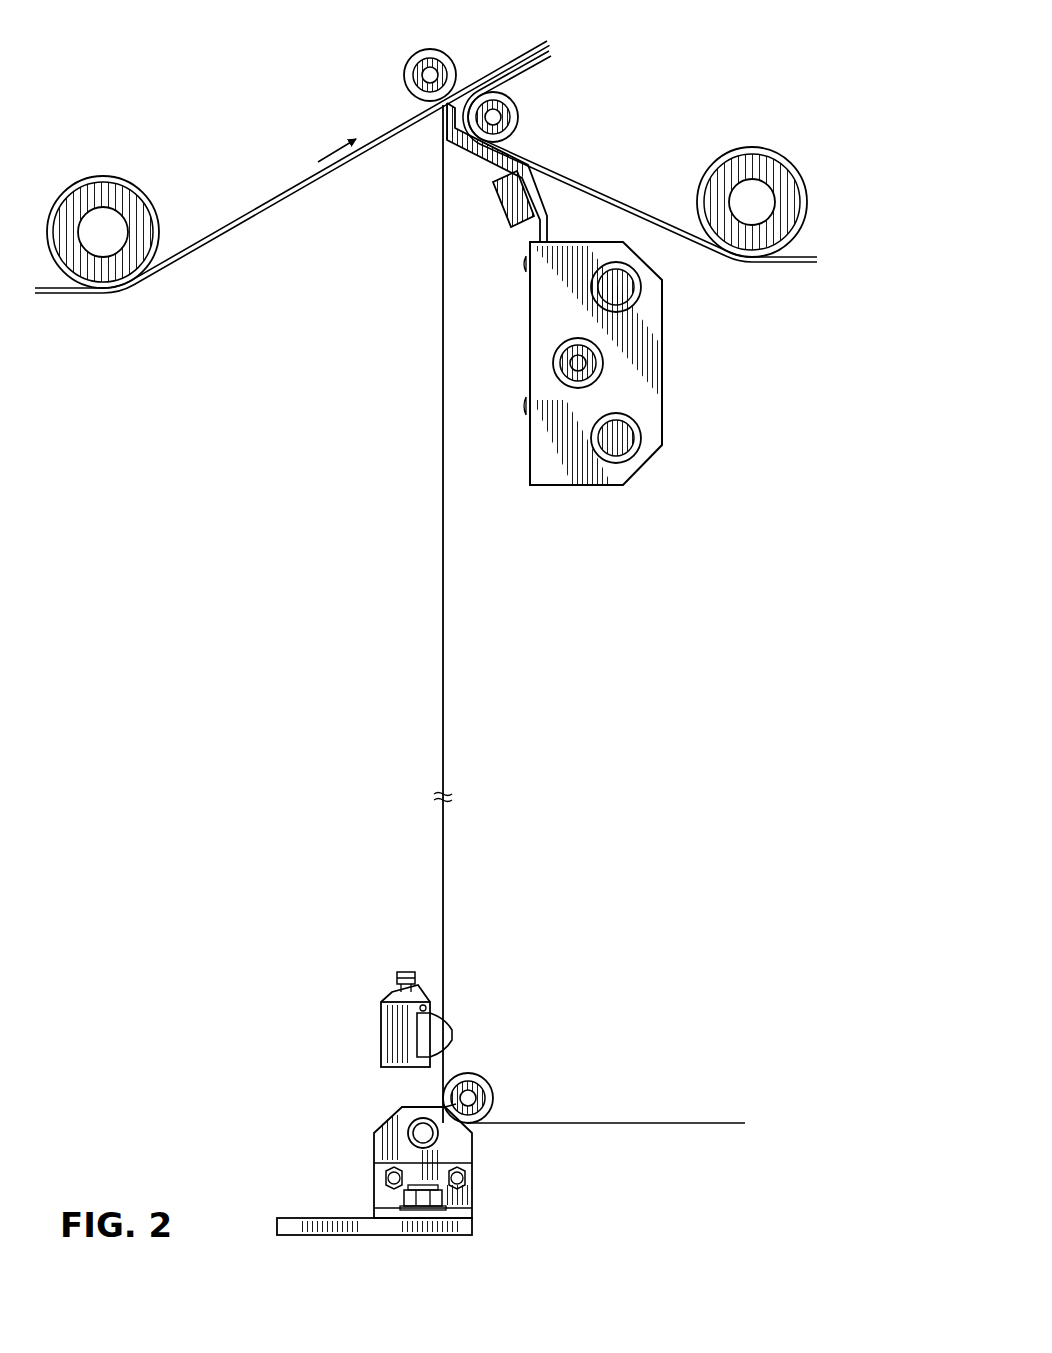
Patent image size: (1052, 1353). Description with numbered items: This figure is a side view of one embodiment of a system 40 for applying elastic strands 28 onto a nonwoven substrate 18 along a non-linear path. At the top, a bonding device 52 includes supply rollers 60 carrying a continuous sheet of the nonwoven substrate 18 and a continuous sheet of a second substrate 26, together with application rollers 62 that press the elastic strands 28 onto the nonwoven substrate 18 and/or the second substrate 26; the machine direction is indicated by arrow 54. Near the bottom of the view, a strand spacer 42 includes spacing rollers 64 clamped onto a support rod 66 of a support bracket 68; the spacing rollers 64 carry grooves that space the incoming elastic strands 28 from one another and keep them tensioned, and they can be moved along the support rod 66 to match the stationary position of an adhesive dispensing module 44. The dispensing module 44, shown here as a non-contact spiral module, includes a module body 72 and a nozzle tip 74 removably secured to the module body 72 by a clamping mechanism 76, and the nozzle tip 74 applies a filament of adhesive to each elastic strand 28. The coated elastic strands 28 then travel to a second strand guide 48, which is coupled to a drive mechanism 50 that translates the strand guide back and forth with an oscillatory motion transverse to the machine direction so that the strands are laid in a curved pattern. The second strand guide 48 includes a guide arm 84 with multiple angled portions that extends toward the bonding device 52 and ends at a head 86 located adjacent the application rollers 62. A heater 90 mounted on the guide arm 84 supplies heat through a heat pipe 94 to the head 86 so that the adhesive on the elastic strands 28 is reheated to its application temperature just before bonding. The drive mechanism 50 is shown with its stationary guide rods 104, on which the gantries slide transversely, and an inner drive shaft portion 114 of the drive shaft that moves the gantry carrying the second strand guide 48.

The nonwoven substrate 18 is at (247, 214).
The second substrate 26 is at (780, 263).
The elastic strands 28 is at (446, 604).
The system 40 is at (672, 72).
The strand spacer 42 is at (403, 1169).
The adhesive dispensing module 44 is at (414, 997).
The second strand guide 48 is at (487, 179).
The drive mechanism 50 is at (597, 363).
The bonding device 52 is at (465, 75).
The arrow 54 is at (340, 148).
The supply rollers 60 is at (114, 176).
The application rollers 62 is at (407, 57).
The spacing rollers 64 is at (494, 1096).
The support rod 66 is at (408, 1130).
The support bracket 68 is at (474, 1148).
The module body 72 is at (380, 1036).
The nozzle tip 74 is at (453, 1036).
The clamping mechanism 76 is at (406, 970).
The guide arm 84 is at (535, 188).
The head 86 is at (445, 122).
The heater 90 is at (504, 212).
The heat pipe 94 is at (465, 155).
The guide rods 104 is at (642, 288).
The inner drive shaft portion 114 is at (553, 363).